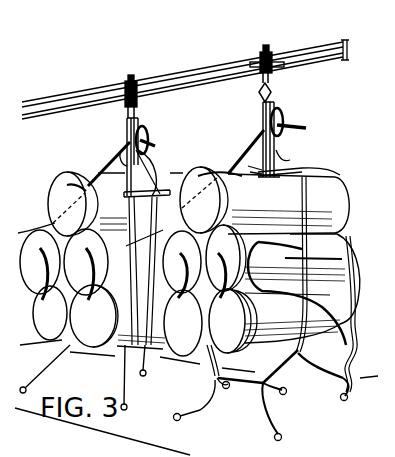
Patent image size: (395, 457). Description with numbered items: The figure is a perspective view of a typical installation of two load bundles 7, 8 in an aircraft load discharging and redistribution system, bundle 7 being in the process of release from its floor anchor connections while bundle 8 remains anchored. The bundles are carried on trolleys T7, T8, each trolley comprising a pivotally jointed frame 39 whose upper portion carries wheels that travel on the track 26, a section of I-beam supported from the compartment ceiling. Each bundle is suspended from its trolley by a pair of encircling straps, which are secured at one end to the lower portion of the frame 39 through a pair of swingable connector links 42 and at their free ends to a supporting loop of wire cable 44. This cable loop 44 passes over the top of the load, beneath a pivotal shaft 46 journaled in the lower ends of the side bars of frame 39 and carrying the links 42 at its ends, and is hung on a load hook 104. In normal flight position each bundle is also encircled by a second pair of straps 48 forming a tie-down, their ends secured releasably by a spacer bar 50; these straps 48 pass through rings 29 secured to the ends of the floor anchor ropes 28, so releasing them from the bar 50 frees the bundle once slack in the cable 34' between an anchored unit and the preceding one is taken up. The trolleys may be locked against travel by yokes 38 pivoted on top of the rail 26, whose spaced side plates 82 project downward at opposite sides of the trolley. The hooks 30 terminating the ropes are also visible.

The track 26 is at (341, 44).
The yoke 38 is at (133, 76).
The side plate 82 is at (285, 65).
The trolley T8 is at (143, 110).
The trolley T7 is at (288, 98).
The load hook 104 is at (155, 145).
The supporting loop of wire cable 44 is at (291, 160).
The swingable connector link 42 is at (124, 150).
The pivotally jointed frame 39 is at (126, 122).
The pivotal shaft 46 is at (150, 186).
The cable 34' is at (72, 194).
The spacer bar 50 is at (211, 200).
The load bundle 7 is at (365, 250).
The load bundle 8 is at (33, 305).
The strap 48 is at (309, 349).
The ring 29 is at (229, 389).
The floor anchor rope 28 is at (338, 399).
The cable hook 30 is at (283, 418).